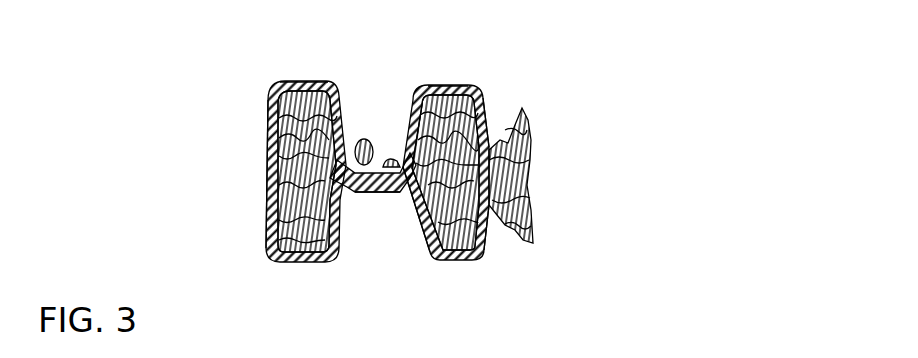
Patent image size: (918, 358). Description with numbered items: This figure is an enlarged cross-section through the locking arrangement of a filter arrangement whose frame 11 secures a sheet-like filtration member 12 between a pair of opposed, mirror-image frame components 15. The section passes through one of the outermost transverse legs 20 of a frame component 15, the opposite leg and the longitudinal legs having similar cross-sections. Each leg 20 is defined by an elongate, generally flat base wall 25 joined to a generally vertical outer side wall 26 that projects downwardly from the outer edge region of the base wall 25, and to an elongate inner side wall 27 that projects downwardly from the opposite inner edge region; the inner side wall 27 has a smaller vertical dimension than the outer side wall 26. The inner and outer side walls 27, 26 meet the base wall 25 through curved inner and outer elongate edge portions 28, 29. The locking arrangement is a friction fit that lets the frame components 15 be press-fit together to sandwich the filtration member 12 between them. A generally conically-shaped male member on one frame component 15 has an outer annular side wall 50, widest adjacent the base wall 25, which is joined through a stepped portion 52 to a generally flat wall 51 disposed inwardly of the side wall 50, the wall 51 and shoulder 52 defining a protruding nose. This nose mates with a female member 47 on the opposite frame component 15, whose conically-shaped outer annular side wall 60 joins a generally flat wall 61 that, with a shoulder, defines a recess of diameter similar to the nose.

The frame 11 is at (477, 158).
The filtration member 12 is at (517, 123).
The frame component 15 is at (274, 177).
The transverse leg 20 is at (480, 71).
The base wall 25 is at (317, 82).
The outer side wall 26 is at (270, 106).
The inner side wall 27 is at (497, 130).
The inner edge portion 28 is at (487, 107).
The outer edge portion 29 is at (270, 82).
The female member 47 is at (376, 229).
The outer annular side wall 50 is at (409, 137).
The flat wall 51 is at (358, 140).
The stepped portion 52 is at (270, 147).
The outer annular side wall 60 is at (410, 215).
The flat wall 61 is at (368, 196).